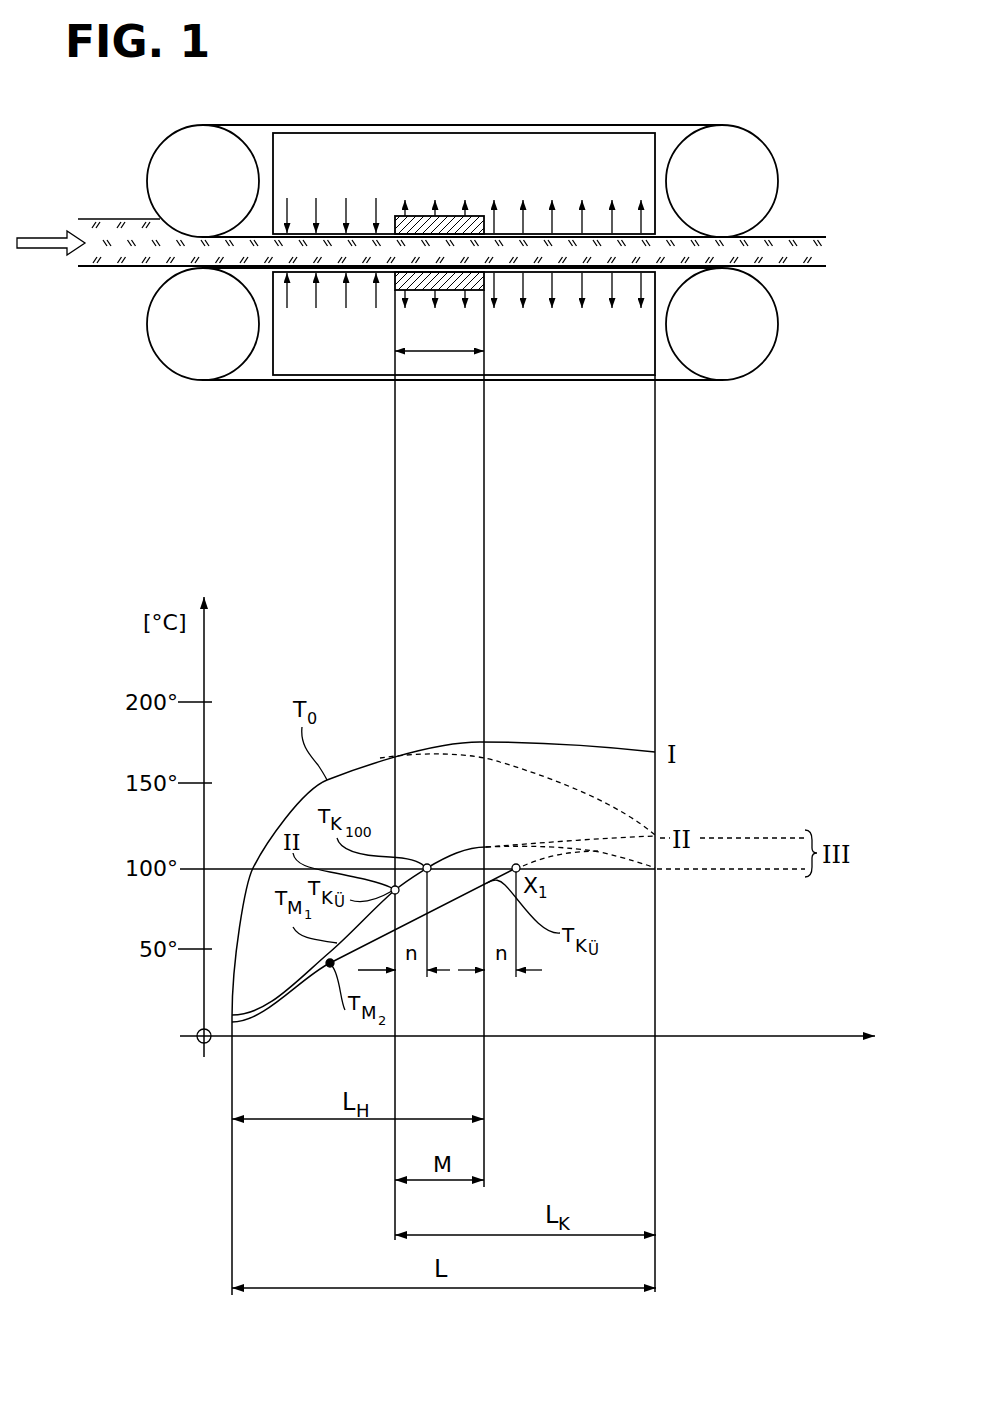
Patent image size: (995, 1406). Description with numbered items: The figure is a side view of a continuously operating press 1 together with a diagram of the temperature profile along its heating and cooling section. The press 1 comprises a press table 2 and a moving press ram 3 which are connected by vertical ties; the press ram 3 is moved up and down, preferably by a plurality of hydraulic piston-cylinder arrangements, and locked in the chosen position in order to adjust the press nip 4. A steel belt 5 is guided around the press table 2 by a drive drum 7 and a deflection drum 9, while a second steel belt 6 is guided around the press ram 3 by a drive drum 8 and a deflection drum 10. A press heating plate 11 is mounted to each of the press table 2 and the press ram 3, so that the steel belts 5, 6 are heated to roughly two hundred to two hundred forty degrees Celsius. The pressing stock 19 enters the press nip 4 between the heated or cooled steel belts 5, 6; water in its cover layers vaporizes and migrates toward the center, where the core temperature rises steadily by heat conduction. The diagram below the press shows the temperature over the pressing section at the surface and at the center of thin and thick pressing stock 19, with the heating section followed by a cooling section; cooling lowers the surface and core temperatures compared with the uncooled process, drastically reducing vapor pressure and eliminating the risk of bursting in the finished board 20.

The continuously operating press 1 is at (498, 82).
The press table 2 is at (440, 363).
The press ram 3 is at (408, 148).
The press nip 4 is at (617, 250).
The steel belt 5 is at (367, 382).
The steel belt 6 is at (338, 125).
The drive drum 7 is at (730, 338).
The drive drum 8 is at (723, 150).
The deflection drum 9 is at (217, 339).
The deflection drum 10 is at (202, 150).
The press heating plate 11 is at (570, 233).
The pressing stock 19 is at (112, 259).
The finished board 20 is at (803, 257).